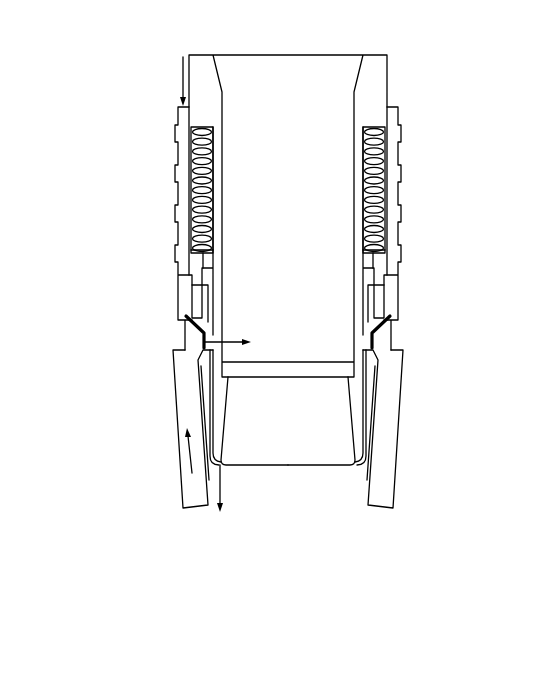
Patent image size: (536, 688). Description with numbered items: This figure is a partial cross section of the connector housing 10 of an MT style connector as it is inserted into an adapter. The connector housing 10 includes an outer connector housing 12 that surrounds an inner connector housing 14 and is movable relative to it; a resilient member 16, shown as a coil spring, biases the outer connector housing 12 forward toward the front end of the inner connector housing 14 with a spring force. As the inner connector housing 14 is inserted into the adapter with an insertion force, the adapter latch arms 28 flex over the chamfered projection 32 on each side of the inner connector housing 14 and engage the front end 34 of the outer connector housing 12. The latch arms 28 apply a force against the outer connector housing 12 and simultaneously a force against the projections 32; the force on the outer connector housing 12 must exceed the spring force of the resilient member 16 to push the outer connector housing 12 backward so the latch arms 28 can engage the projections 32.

The connector housing 10 is at (117, 126).
The outer connector housing 12 is at (397, 237).
The inner connector housing 14 is at (313, 452).
The resilient member 16 is at (385, 137).
The latch arms 28 is at (182, 398).
The projection 32 is at (288, 216).
The front end 34 is at (187, 322).